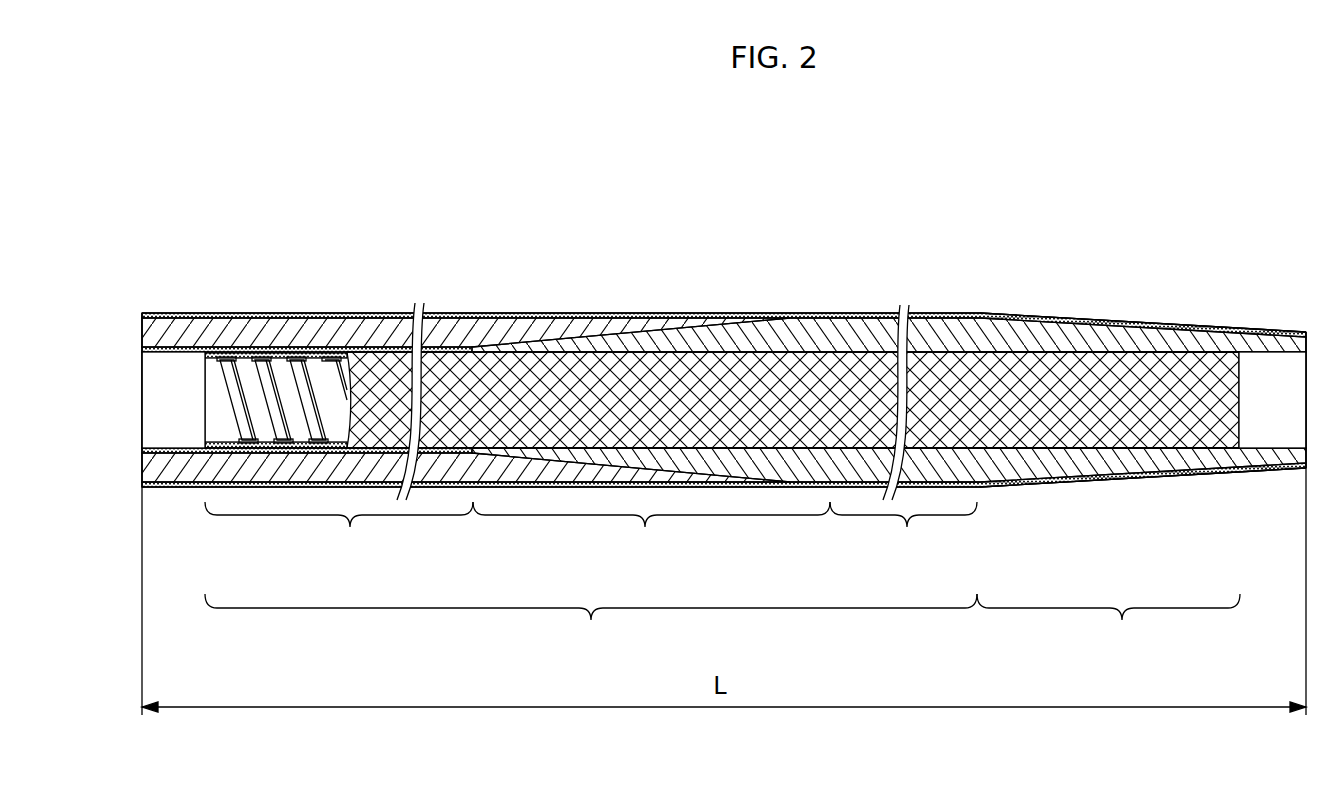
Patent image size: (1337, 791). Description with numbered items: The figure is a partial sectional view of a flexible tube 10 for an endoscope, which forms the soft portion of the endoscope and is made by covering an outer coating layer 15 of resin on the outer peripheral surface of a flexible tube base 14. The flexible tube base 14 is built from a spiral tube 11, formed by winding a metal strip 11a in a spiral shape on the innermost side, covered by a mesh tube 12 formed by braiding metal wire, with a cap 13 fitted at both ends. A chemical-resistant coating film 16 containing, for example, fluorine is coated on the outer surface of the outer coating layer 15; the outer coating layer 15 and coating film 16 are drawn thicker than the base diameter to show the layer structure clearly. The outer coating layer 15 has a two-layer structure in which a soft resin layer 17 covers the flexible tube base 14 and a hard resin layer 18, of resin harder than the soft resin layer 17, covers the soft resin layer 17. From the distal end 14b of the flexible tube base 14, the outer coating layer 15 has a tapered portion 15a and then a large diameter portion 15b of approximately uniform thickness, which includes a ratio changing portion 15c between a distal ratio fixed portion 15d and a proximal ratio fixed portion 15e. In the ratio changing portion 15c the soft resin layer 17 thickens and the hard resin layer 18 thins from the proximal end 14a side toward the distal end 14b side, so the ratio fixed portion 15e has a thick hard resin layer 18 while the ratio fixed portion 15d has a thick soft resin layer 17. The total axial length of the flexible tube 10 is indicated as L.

The flexible tube for an endoscope 10 is at (1005, 293).
The spiral tube 11 is at (277, 344).
The metal strip 11a is at (283, 366).
The mesh tube 12 is at (1043, 415).
The cap 13 is at (177, 432).
The flexible tube base 14 is at (624, 373).
The proximal end 14a is at (140, 358).
The distal end 14b is at (1306, 388).
The outer coating layer 15 is at (790, 319).
The tapered portion 15a is at (1108, 621).
The large diameter portion 15b is at (591, 621).
The ratio changing portion 15c is at (651, 530).
The ratio fixed portion 15d is at (903, 529).
The ratio fixed portion 15e is at (339, 530).
The chemical-resistant coating film 16 is at (1087, 320).
The soft resin layer 17 is at (828, 340).
The hard resin layer 18 is at (505, 330).